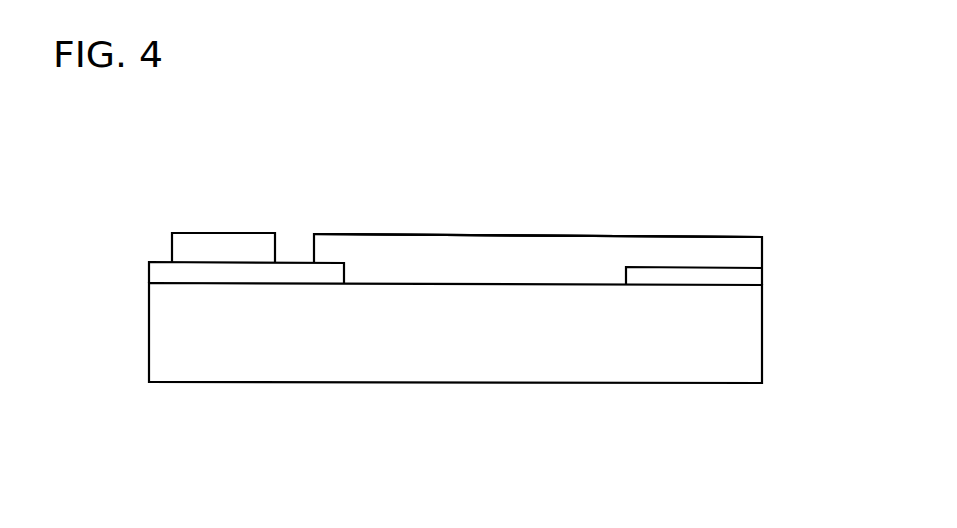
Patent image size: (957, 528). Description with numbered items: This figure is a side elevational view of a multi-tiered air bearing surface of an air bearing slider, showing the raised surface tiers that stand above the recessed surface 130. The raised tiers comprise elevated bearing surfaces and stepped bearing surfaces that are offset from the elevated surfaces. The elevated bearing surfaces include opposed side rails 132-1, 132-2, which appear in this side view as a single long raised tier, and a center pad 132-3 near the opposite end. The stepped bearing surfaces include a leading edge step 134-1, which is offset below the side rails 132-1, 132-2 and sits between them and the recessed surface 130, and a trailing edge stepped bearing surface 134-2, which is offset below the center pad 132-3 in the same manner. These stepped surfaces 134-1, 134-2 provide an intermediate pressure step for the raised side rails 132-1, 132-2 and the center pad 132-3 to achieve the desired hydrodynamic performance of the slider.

The recessed surface 130 is at (430, 283).
The side rail 132-1 is at (515, 235).
The side rail 132-2 is at (538, 235).
The center pad 132-3 is at (222, 232).
The leading edge step 134-1 is at (683, 266).
The trailing edge stepped bearing surface 134-2 is at (292, 262).